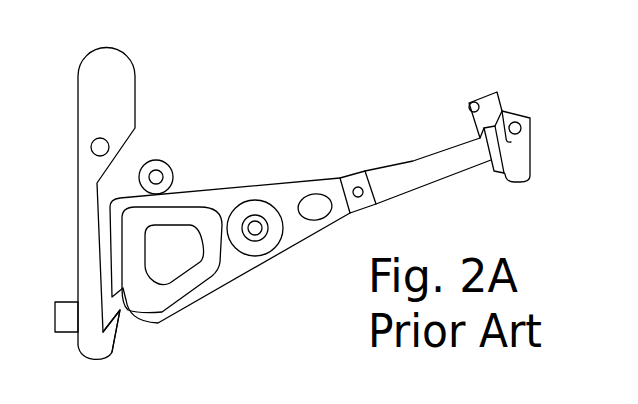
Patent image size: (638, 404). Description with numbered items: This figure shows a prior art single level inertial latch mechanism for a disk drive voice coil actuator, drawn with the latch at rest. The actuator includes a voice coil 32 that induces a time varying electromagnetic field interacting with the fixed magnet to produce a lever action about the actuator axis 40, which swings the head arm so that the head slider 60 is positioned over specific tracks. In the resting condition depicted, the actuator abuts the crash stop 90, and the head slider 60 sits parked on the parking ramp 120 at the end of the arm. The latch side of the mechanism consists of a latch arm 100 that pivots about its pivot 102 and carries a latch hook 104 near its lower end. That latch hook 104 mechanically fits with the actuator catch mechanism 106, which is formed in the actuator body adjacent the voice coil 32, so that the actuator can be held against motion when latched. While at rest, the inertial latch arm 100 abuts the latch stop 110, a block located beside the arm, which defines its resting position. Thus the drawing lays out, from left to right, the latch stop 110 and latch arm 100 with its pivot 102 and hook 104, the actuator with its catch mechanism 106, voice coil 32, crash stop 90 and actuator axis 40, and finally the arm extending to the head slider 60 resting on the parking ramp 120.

The voice coil 32 is at (203, 277).
The actuator axis 40 is at (248, 217).
The head slider unit 60 is at (428, 154).
The crash stop 90 is at (157, 160).
The latch arm 100 is at (110, 47).
The latch arm pivot 102 is at (90, 150).
The latch hook 104 is at (117, 330).
The actuator catch mechanism 106 is at (123, 288).
The latch stop 110 is at (55, 308).
The parking ramp 120 is at (504, 112).